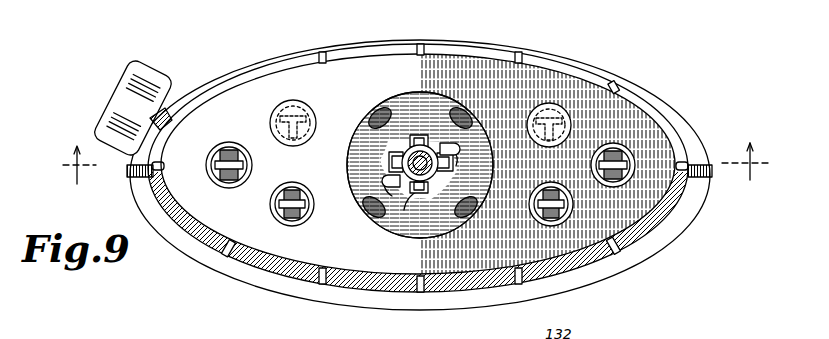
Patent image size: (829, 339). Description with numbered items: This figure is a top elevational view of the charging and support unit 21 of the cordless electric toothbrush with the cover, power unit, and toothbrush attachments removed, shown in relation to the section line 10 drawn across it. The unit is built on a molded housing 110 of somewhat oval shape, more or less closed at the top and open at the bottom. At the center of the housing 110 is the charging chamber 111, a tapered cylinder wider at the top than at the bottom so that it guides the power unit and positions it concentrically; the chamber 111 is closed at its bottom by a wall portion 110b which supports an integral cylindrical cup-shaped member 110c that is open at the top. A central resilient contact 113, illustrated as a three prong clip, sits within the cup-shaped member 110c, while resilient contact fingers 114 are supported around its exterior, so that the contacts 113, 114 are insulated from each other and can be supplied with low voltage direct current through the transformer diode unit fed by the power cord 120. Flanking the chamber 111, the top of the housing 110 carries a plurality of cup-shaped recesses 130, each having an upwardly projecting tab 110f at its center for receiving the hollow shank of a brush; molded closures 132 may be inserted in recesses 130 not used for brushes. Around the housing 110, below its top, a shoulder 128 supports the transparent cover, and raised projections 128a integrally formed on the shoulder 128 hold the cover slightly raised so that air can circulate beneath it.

The section line 10 is at (417, 163).
The charging and support unit 21 is at (690, 231).
The molded housing member 110 is at (655, 100).
The wall portion 110b is at (400, 228).
The cup-shaped member 110c is at (423, 188).
The upwardly projecting tab 110f is at (296, 182).
The charging chamber 111 is at (358, 178).
The central resilient contact 113 is at (428, 156).
The resilient contact fingers 114 is at (414, 143).
The power cord 120 is at (170, 104).
The shoulder 128 is at (612, 250).
The raised projections 128a is at (420, 44).
The cup-shaped recesses 130 is at (270, 207).
The molded closures 132 is at (270, 116).